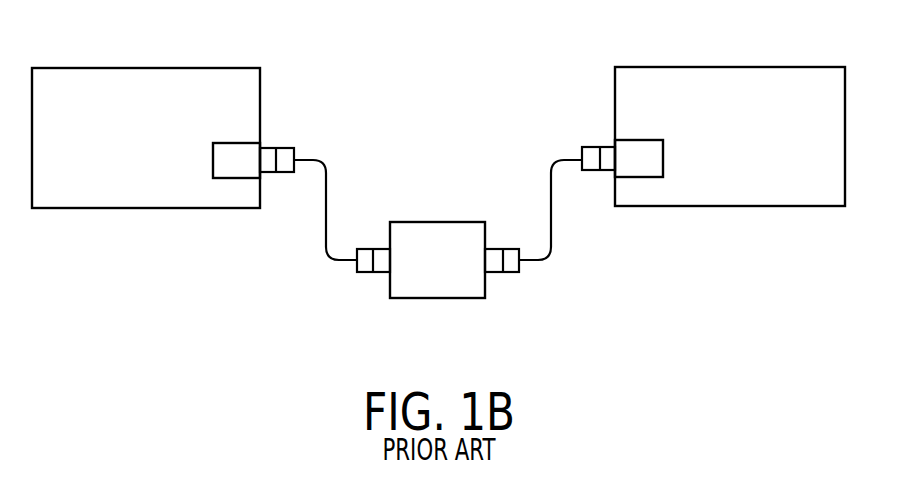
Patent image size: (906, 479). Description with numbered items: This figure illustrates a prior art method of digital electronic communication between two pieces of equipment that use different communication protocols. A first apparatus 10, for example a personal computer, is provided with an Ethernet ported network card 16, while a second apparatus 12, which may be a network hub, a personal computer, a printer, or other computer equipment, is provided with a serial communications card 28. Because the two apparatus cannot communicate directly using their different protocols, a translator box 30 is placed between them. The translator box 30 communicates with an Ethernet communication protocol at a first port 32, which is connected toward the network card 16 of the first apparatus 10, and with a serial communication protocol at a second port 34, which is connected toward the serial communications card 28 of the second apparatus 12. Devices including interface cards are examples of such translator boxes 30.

The first apparatus 10 is at (205, 68).
The second apparatus 12 is at (685, 66).
The network card 16 is at (230, 178).
The serial communications card 28 is at (635, 177).
The translator box 30 is at (450, 298).
The first port 32 is at (382, 272).
The second port 34 is at (492, 272).